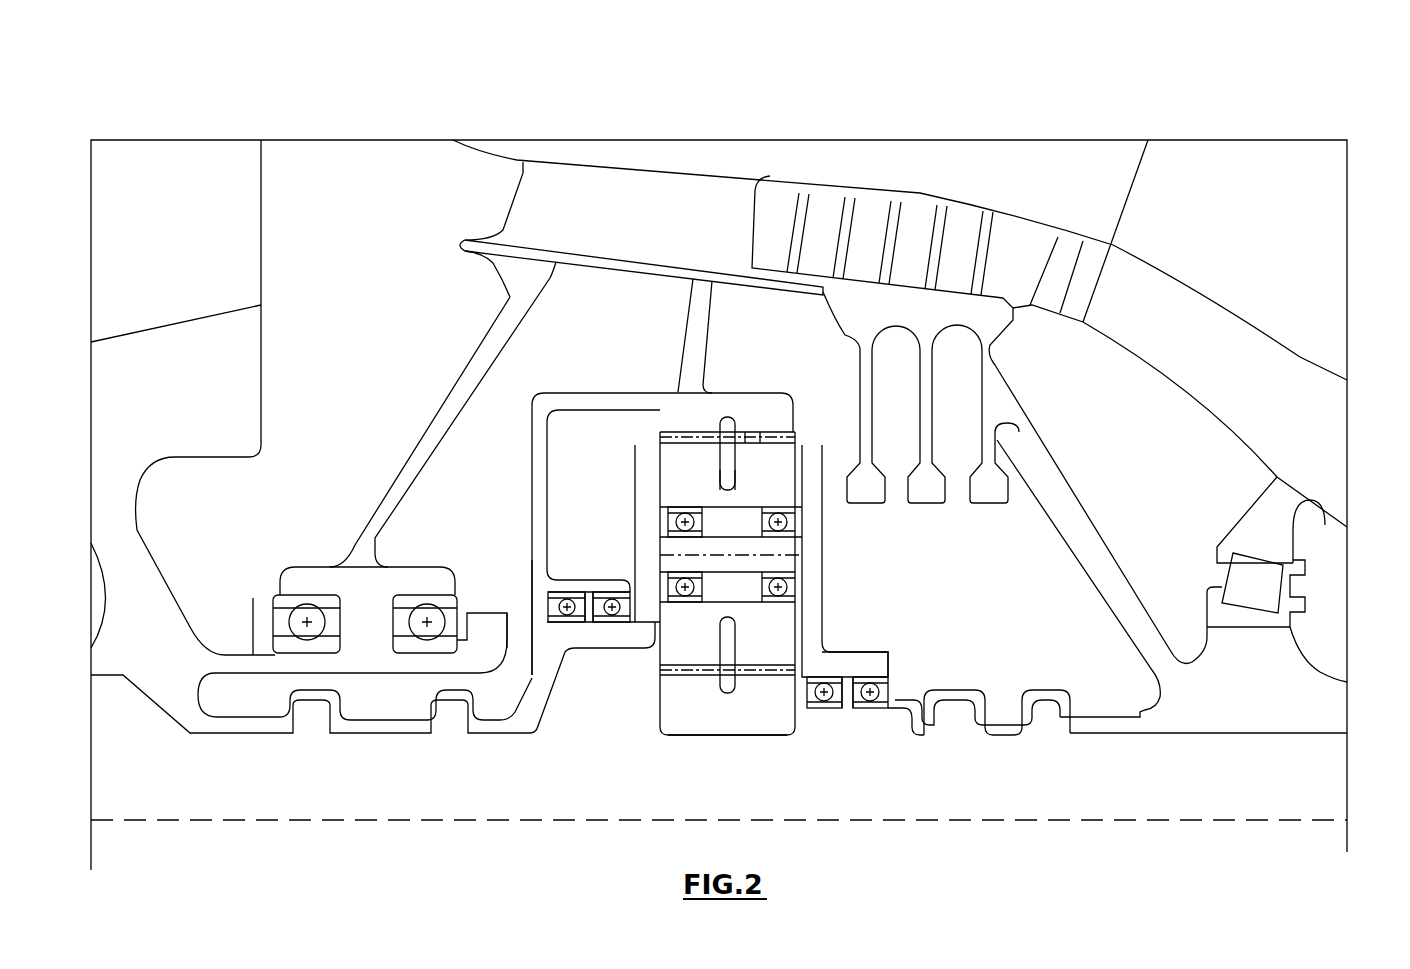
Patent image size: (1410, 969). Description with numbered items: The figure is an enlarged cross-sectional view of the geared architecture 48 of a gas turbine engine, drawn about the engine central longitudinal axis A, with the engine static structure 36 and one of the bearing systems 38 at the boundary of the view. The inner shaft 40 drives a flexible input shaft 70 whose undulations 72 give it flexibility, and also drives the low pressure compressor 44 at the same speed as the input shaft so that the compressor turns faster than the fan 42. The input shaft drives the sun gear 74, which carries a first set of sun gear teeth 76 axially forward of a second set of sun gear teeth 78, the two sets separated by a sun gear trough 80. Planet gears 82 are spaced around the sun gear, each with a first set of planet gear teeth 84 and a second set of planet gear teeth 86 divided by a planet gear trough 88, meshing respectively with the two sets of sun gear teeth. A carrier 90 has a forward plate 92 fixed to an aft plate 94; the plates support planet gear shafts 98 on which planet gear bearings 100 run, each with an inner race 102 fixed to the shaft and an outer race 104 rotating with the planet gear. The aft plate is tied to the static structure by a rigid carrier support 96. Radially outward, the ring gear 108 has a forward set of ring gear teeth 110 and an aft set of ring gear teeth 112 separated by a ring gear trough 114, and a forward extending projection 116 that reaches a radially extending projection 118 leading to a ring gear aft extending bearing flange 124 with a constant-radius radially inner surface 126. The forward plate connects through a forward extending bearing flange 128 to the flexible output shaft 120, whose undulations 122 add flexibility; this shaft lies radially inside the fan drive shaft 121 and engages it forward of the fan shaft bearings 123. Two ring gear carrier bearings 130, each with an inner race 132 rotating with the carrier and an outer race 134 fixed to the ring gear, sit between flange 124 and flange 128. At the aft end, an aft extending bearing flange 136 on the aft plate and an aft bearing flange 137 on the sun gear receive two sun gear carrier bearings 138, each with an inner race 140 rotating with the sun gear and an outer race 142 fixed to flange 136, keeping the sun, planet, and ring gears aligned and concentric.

The engine static structure 36 is at (577, 270).
The bearing systems 38 is at (1328, 572).
The inner shaft 40 is at (1248, 733).
The fan 42 is at (153, 182).
The low pressure compressor 44 is at (1052, 88).
The geared architecture 48 is at (546, 378).
The flexible input shaft 70 is at (1003, 750).
The undulations 72 is at (1040, 683).
The sun gear 74 is at (717, 728).
The first set of sun gear teeth 76 is at (660, 668).
The second set of sun gear teeth 78 is at (750, 670).
The sun gear trough 80 is at (730, 688).
The planet gears 82 is at (675, 463).
The first set of planet gear teeth 84 is at (687, 407).
The second set of planet gear teeth 86 is at (786, 433).
The planet gear trough 88 is at (733, 489).
The carrier 90 is at (840, 563).
The forward plate 92 is at (643, 478).
The aft plate 94 is at (826, 545).
The rigid carrier support 96 is at (698, 330).
The planet gear shafts 98 is at (826, 553).
The planet gear bearings 100 is at (677, 520).
The inner race 102 is at (667, 526).
The outer race 104 is at (667, 509).
The ring gear 108 is at (518, 387).
The forward set of ring gear teeth 110 is at (713, 428).
The aft set of ring gear teeth 112 is at (771, 432).
The ring gear trough 114 is at (747, 432).
The forward extending projection 116 is at (585, 400).
The radially extending projection 118 is at (538, 483).
The flexible output shaft 120 is at (390, 757).
The fan drive shaft 121 is at (253, 603).
The undulations 122 is at (428, 697).
The fan shaft bearings 123 is at (425, 620).
The ring gear aft extending bearing flange 124 is at (612, 598).
The radially inner surface 126 is at (587, 600).
The forward extending bearing flange 128 is at (569, 635).
The ring gear carrier bearings 130 is at (567, 598).
The inner race 132 is at (547, 618).
The outer race 134 is at (556, 590).
The aft extending bearing flange 136 is at (870, 648).
The aft bearing flange 137 is at (817, 728).
The sun gear carrier bearings 138 is at (870, 700).
The inner race 140 is at (878, 710).
The outer race 142 is at (888, 682).
The engine central longitudinal axis A is at (103, 822).